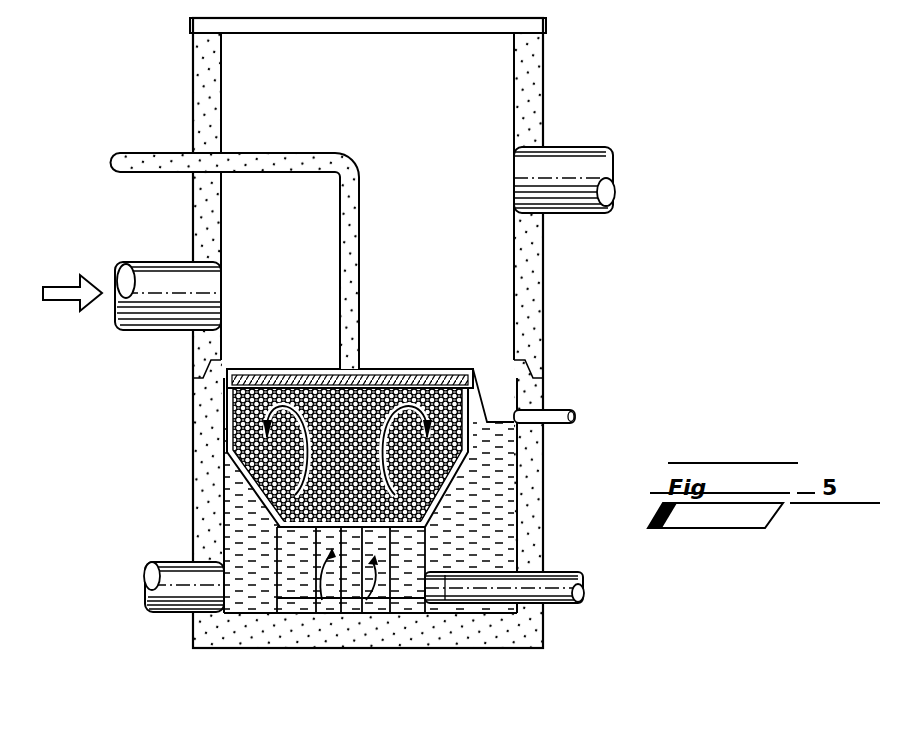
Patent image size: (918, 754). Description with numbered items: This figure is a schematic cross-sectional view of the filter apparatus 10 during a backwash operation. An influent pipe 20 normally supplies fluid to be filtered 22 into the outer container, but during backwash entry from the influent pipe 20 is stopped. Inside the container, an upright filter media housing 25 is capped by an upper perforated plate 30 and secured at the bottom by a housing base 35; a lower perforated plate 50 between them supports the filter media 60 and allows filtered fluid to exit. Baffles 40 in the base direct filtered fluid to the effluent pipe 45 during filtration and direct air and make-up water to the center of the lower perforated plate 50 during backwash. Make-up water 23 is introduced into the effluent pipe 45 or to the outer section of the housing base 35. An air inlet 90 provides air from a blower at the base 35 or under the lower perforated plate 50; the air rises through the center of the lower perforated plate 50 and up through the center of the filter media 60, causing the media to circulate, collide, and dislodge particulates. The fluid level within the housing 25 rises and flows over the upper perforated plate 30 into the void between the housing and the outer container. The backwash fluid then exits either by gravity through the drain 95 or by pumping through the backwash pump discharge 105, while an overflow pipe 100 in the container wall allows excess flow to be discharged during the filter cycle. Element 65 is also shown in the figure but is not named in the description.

The filter apparatus 10 is at (598, 70).
The influent pipe 20 is at (165, 262).
The fluid to be filtered 22 is at (248, 583).
The make-up water 23 is at (585, 594).
The filter media housing 25 is at (467, 458).
The upper perforated plate 30 is at (435, 369).
The housing base 35 is at (278, 600).
The baffles 40 is at (326, 605).
The effluent pipe 45 is at (560, 604).
The lower perforated plate 50 is at (430, 527).
The filter media 60 is at (232, 412).
The media beads 65 is at (268, 446).
The air inlet 90 is at (157, 153).
The drain 95 is at (172, 612).
The overflow pipe 100 is at (567, 215).
The backwash pump discharge 105 is at (575, 413).